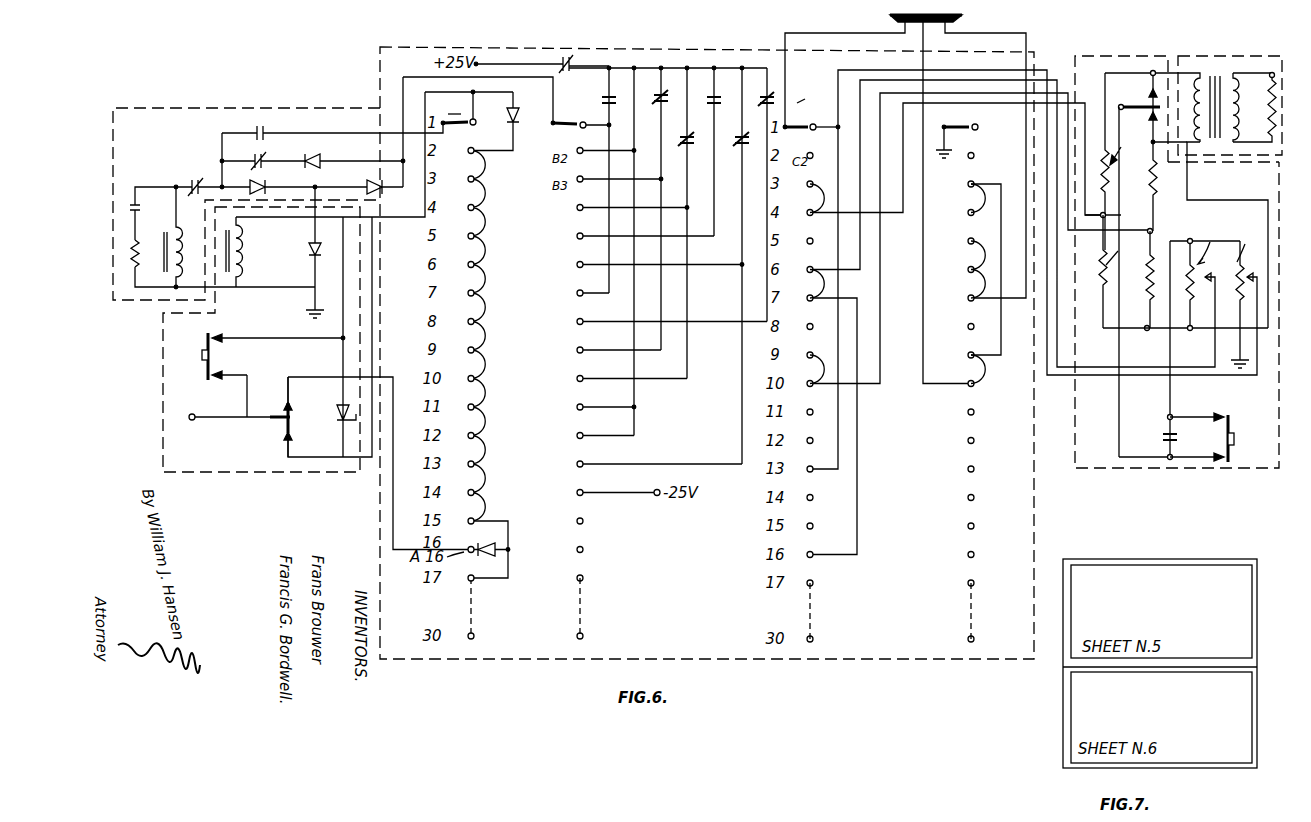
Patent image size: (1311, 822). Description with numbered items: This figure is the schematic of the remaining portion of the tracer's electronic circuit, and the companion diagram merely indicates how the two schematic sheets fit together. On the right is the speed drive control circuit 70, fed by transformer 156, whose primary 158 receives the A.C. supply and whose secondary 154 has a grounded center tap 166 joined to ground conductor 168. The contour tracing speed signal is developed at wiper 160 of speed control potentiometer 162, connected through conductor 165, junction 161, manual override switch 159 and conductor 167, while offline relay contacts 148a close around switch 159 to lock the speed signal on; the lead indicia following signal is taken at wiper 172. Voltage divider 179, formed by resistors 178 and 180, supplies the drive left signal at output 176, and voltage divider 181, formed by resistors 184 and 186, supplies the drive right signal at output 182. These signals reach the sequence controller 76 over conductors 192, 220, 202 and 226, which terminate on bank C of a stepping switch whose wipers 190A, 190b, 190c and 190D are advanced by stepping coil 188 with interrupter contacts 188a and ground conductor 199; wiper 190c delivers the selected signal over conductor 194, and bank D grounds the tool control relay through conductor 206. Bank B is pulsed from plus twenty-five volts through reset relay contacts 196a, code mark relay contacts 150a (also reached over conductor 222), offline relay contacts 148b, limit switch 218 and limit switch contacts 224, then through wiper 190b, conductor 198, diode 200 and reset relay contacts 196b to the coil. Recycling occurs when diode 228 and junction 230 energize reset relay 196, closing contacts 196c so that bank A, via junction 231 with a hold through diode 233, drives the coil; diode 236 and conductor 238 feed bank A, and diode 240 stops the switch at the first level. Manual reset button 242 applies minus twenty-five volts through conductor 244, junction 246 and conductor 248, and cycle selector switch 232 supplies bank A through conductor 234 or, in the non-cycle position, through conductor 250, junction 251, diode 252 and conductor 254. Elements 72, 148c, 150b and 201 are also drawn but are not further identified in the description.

The sequence controller 76 is at (277, 109).
The reset relay contacts 196c is at (262, 133).
The junction 231 is at (222, 183).
The interrupter contacts 188a is at (198, 180).
The diode 233 is at (254, 180).
The manual reset relay contacts 196b is at (256, 159).
The diode 200 is at (320, 159).
The junction 230 is at (320, 185).
The diode 228 is at (368, 180).
The stepping coil 188 is at (175, 261).
The reset relay 196 is at (245, 262).
The ground conductor 199 is at (258, 287).
The conductor 248 is at (319, 323).
The manual reset button 242 is at (214, 354).
The junction 246 is at (277, 347).
The conductor 244 is at (247, 402).
The conductor 234 is at (301, 377).
The cycle selector switch 232 is at (282, 418).
The diode 252 is at (337, 422).
The conductor 250 is at (302, 456).
The junction 251 is at (355, 471).
The conductor 198 is at (425, 76).
The conductor 254 is at (464, 91).
The diode 240 is at (515, 109).
The bank A wiper 190A is at (450, 127).
The bank B wiper 190b is at (560, 128).
The reset relay contacts 196a is at (562, 61).
The code mark relay contacts 150a is at (603, 98).
The offline relay contacts 148b is at (657, 96).
The limit switch 218 is at (713, 96).
The limit switch contacts 224 is at (766, 96).
The variable capacitor 148c is at (684, 138).
The variable capacitor 150b is at (740, 136).
The conductor 222 is at (609, 220).
The conductor 238 is at (484, 506).
The diode 236 is at (503, 541).
The conductor 194 is at (857, 30).
The antenna line 201 is at (926, 43).
The conductor 206 is at (966, 30).
The conductor 192 is at (1189, 383).
The conductor 220 is at (912, 63).
The conductor 226 is at (960, 63).
The conductor 202 is at (1003, 63).
The bank C wiper 190c is at (806, 119).
The bank D wiper 190D is at (949, 137).
The speed drive control circuit 70 is at (1131, 55).
The transformer unit 72 is at (1216, 55).
The transformer secondary 154 is at (1197, 75).
The transformer 156 is at (1232, 75).
The primary 158 is at (1254, 108).
The grounded center tap 166 is at (1196, 139).
The voltage divider 179 is at (1130, 282).
The voltage divider 181 is at (1148, 168).
The resistor 178 is at (1109, 189).
The resistor 184 is at (1160, 177).
The drive left output 176 is at (1118, 216).
The drive right output 182 is at (1152, 230).
The resistor 180 is at (1124, 271).
The resistor 186 is at (1137, 281).
The speed control potentiometer 162 is at (1217, 241).
The conductor 165 is at (1253, 240).
The wiper 160 is at (1194, 275).
The wiper 172 is at (1246, 272).
The ground conductor 168 is at (1267, 186).
The conductor 167 is at (1119, 425).
The junction 161 is at (1171, 416).
The offline relay contacts 148a is at (1172, 437).
The manual override switch 159 is at (1231, 419).